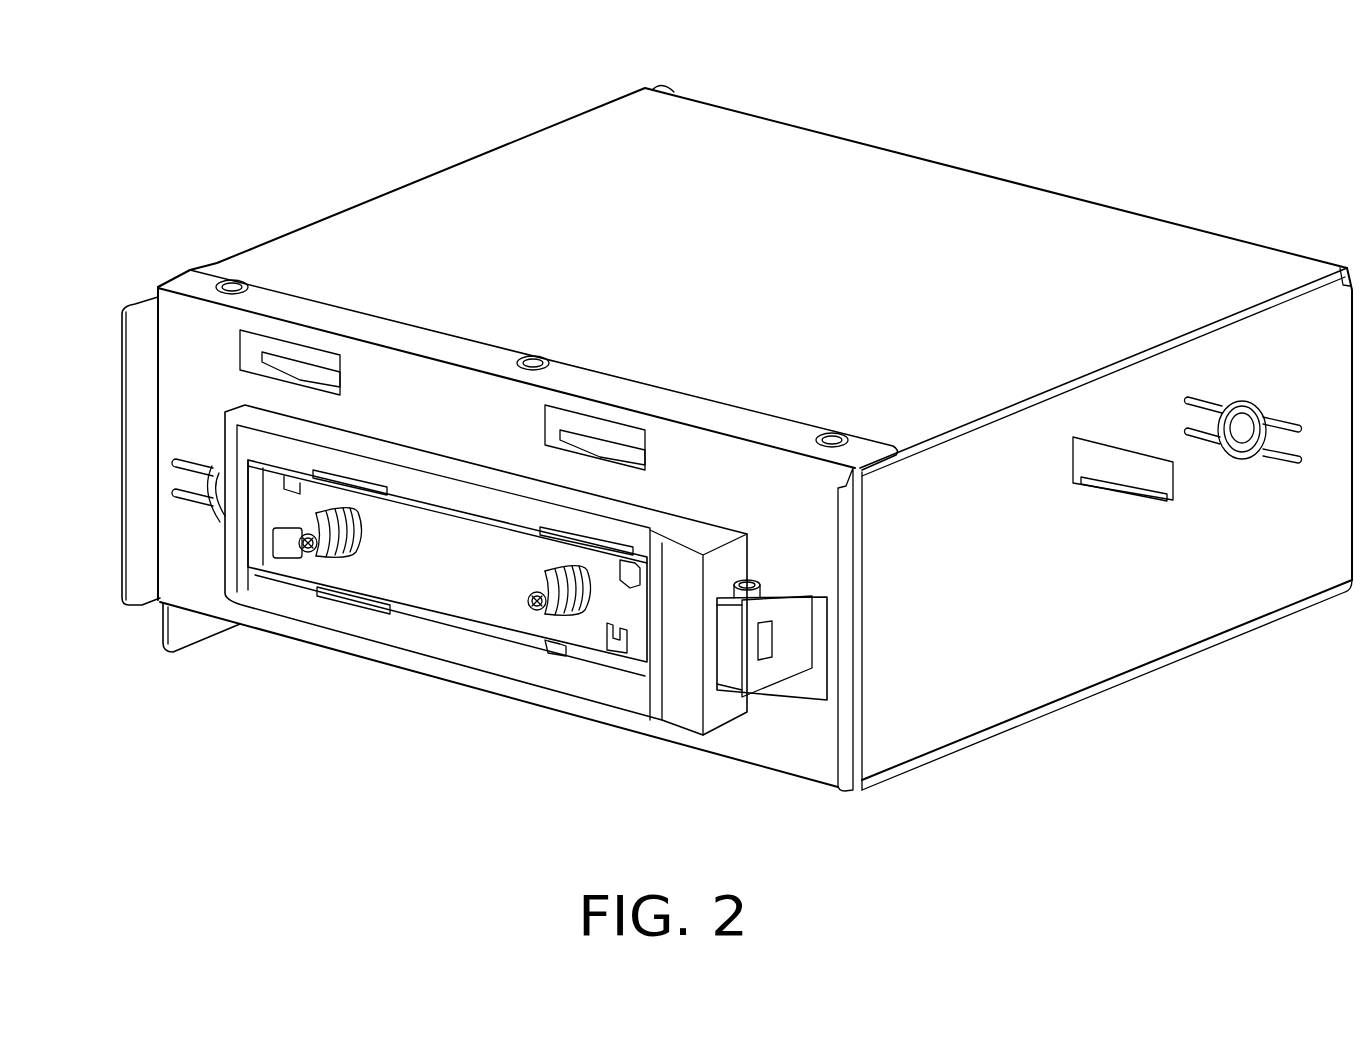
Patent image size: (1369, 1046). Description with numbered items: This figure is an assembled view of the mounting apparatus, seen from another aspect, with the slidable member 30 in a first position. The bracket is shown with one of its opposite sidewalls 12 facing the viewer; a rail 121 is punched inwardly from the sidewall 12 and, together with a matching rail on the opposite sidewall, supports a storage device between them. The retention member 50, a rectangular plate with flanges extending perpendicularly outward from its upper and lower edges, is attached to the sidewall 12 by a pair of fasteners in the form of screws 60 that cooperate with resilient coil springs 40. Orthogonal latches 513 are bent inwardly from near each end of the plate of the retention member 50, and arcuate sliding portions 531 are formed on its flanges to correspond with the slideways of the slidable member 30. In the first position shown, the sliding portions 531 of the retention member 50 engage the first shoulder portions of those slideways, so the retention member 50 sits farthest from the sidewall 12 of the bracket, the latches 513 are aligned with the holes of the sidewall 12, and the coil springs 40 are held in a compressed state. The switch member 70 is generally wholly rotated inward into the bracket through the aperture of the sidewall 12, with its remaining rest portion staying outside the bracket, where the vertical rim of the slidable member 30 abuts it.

The sidewall 12 is at (190, 395).
The rail 121 is at (272, 341).
The slidable member 30 is at (262, 593).
The coil spring 40 is at (340, 550).
The retention member 50 is at (480, 587).
The screw 60 is at (313, 553).
The switch member 70 is at (760, 673).
The latch 513 is at (627, 567).
The sliding portion 531 is at (555, 645).